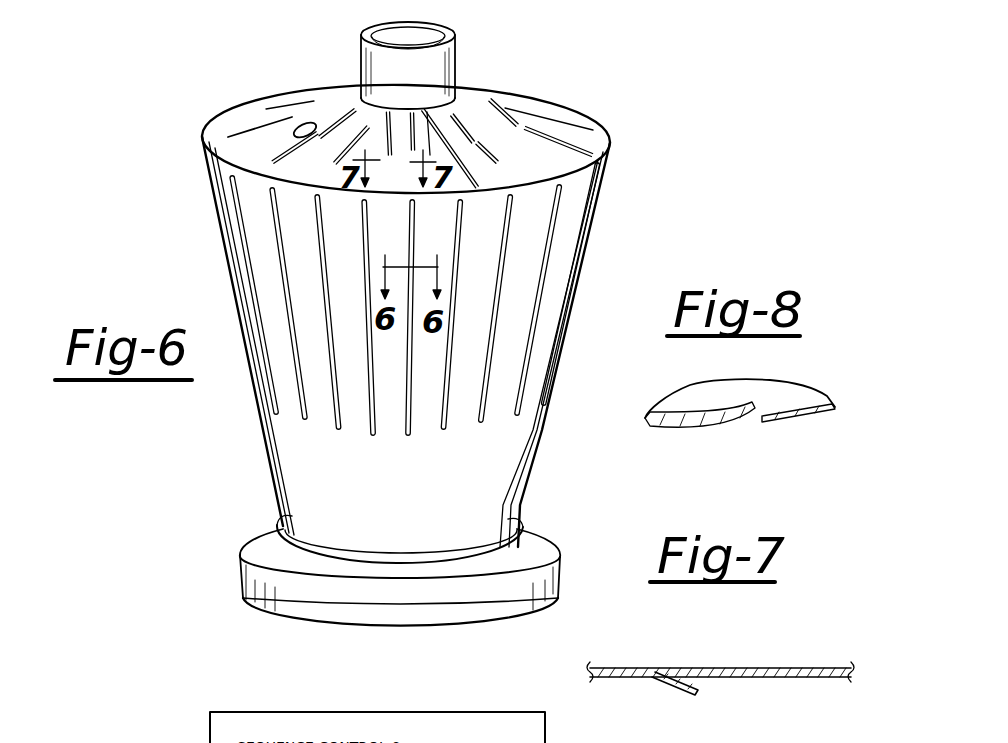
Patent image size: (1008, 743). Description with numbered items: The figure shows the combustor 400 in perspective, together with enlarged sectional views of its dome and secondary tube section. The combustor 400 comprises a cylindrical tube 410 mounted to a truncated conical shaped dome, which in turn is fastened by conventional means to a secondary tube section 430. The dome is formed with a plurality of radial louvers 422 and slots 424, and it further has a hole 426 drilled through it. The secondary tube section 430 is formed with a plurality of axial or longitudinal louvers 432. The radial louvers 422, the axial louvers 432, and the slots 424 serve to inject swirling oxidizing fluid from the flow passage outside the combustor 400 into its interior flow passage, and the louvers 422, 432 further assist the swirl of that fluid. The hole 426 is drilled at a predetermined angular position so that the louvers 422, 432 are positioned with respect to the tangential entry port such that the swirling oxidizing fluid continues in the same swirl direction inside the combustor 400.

In FIG. 6, the combustor 400 is at (607, 153).
In FIG. 6, the cylindrical tube 410 is at (456, 70).
In FIG. 6, the radial louvers 422 is at (443, 123).
In FIG. 7, the radial louvers 422 is at (697, 667).
In FIG. 6, the slots 424 is at (295, 150).
In FIG. 7, the slots 424 is at (783, 667).
In FIG. 6, the hole 426 is at (304, 123).
In FIG. 6, the secondary tube section 430 is at (525, 475).
In FIG. 6, the axial louvers 432 is at (587, 217).
In FIG. 8, the axial louvers 432 is at (763, 430).